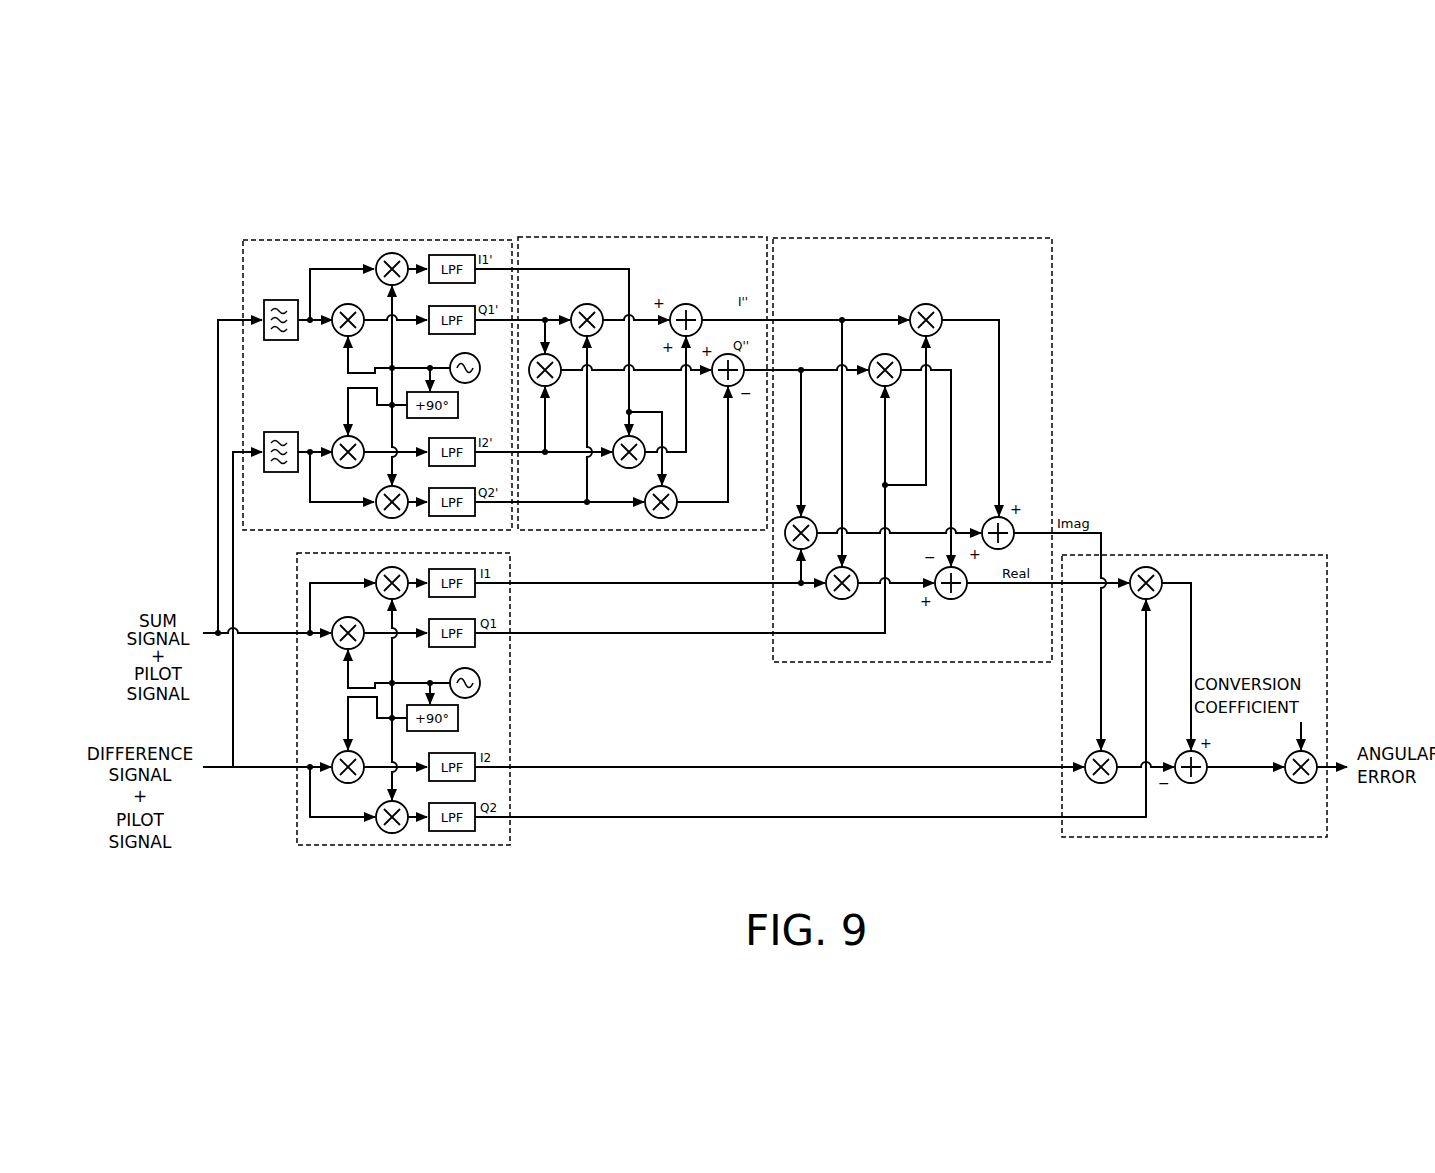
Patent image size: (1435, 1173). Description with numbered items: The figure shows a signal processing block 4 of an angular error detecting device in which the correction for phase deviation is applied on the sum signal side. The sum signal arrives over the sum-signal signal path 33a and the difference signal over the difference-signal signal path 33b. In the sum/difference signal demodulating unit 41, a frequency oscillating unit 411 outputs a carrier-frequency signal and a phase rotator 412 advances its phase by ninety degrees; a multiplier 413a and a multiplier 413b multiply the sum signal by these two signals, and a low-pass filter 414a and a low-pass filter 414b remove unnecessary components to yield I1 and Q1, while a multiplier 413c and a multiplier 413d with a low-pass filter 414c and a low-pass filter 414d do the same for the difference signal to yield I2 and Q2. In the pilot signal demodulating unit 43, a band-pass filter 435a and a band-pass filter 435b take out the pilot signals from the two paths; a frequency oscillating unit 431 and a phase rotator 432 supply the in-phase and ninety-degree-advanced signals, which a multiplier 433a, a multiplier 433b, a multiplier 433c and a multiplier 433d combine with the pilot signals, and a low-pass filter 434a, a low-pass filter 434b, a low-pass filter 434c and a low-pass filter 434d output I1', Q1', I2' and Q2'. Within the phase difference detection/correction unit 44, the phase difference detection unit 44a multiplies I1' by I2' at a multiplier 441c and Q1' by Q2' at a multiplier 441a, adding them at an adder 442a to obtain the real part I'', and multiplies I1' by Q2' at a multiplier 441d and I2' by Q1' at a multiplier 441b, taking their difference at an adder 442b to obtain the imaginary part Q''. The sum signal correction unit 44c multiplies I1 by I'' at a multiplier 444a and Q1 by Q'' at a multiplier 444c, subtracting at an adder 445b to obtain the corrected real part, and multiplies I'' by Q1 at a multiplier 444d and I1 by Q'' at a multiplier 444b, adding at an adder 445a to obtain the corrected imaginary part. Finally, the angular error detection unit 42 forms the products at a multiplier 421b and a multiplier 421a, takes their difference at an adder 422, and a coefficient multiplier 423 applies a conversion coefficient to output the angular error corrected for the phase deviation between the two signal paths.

The signal processing block 4 is at (824, 168).
The sum-signal signal path 33a is at (213, 628).
The difference-signal signal path 33b is at (220, 770).
The sum/difference signal demodulating unit 41 is at (297, 838).
The frequency oscillating unit 411 is at (482, 684).
The phase rotator 412 is at (460, 720).
The multiplier 413a is at (375, 577).
The multiplier 413b is at (335, 645).
The multiplier 413c is at (335, 756).
The multiplier 413d is at (384, 832).
The low-pass filter 414a is at (478, 586).
The low-pass filter 414b is at (478, 640).
The low-pass filter 414c is at (478, 772).
The low-pass filter 414d is at (462, 832).
The angular error detection unit 42 is at (1283, 555).
The multiplier 421a is at (1100, 785).
The multiplier 421b is at (1148, 566).
The adder 422 is at (1190, 785).
The coefficient multiplier 423 is at (1318, 780).
The pilot signal demodulating unit 43 is at (495, 238).
The frequency oscillating unit 431 is at (452, 360).
The phase rotator 432 is at (405, 403).
The multiplier 433a is at (392, 252).
The multiplier 433b is at (345, 304).
The multiplier 433c is at (338, 441).
The multiplier 433d is at (380, 515).
The low-pass filter 434a is at (450, 254).
The low-pass filter 434b is at (478, 306).
The low-pass filter 434c is at (478, 462).
The low-pass filter 434d is at (478, 517).
The band-pass filter 435a is at (262, 312).
The band-pass filter 435b is at (262, 443).
The phase difference detection/correction unit 44 is at (785, 449).
The phase difference detection unit 44a is at (696, 237).
The sum signal correction unit 44c is at (1007, 237).
The multiplier 441a is at (590, 302).
The multiplier 441b is at (537, 386).
The multiplier 441c is at (629, 470).
The multiplier 441d is at (668, 518).
The adder 442a is at (677, 303).
The adder 442b is at (727, 352).
The multiplier 444a is at (840, 600).
The multiplier 444b is at (786, 546).
The multiplier 444c is at (880, 352).
The multiplier 444d is at (935, 292).
The adder 445a is at (1010, 522).
The adder 445b is at (950, 600).